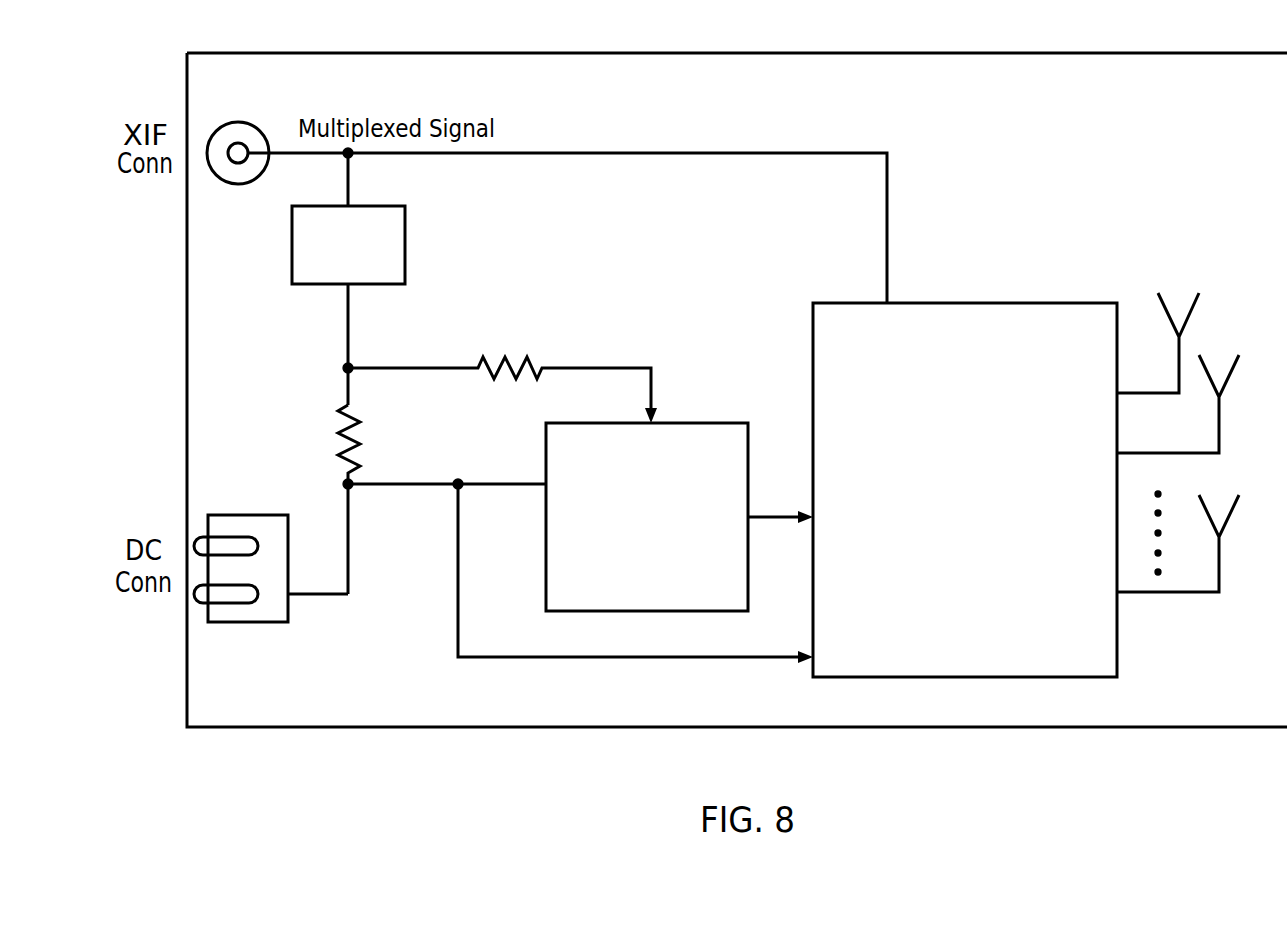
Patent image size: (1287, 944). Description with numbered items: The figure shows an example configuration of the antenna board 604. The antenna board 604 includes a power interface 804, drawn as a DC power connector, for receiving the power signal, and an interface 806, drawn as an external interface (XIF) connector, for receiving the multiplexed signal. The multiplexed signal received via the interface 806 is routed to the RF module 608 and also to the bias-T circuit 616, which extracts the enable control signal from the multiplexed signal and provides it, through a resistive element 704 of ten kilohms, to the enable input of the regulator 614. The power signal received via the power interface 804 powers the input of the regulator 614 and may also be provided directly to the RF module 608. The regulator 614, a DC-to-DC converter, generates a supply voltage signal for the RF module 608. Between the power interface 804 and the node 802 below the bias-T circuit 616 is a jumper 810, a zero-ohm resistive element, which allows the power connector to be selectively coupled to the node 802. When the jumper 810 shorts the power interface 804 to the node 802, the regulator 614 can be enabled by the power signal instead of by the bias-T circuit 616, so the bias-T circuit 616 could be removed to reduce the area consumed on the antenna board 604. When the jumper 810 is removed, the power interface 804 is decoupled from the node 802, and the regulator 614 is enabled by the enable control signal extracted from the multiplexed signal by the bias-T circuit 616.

The antenna board 604 is at (795, 53).
The interface 806 is at (238, 122).
The bias-T circuit 616 is at (381, 206).
The node 802 is at (347, 366).
The jumper 810 is at (354, 410).
The resistive element 704 is at (514, 345).
The regulator 614 is at (698, 423).
The RF module 608 is at (986, 303).
The power interface 804 is at (234, 515).